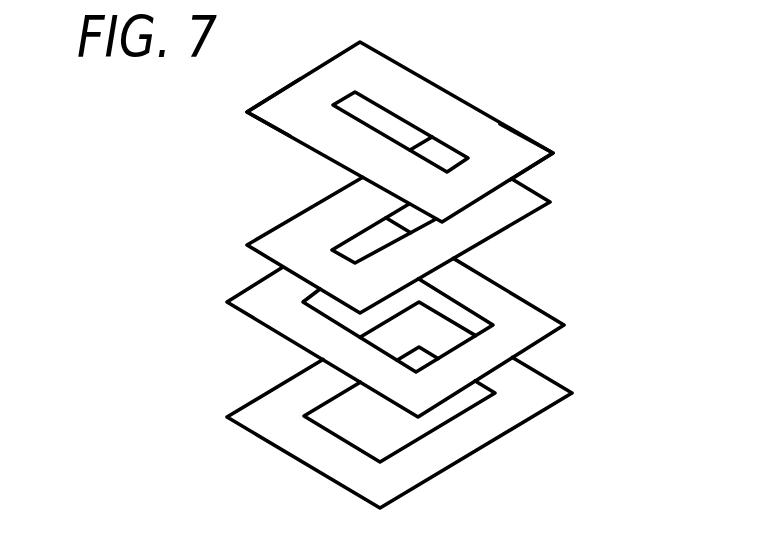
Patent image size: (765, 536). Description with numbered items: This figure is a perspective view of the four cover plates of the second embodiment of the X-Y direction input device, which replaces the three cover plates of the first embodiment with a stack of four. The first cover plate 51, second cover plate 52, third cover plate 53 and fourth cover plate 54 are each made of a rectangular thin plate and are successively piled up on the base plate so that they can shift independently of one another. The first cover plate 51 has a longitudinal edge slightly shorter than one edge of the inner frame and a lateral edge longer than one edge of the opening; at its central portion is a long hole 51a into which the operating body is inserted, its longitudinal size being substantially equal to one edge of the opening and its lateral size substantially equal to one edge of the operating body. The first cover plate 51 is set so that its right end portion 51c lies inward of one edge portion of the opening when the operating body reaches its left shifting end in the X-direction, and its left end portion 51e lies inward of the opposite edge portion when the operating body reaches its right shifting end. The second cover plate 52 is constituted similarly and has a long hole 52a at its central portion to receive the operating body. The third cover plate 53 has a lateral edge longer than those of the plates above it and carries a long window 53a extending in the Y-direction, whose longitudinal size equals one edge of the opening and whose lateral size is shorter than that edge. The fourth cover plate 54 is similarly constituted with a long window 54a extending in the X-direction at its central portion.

The first cover plate 51 is at (395, 92).
The long hole 51a is at (407, 133).
The right end portion 51c is at (518, 138).
The left end portion 51e is at (273, 106).
The second cover plate 52 is at (337, 200).
The long hole 52a is at (348, 242).
The third cover plate 53 is at (490, 287).
The long window 53a is at (477, 323).
The fourth cover plate 54 is at (263, 405).
The long window 54a is at (335, 422).